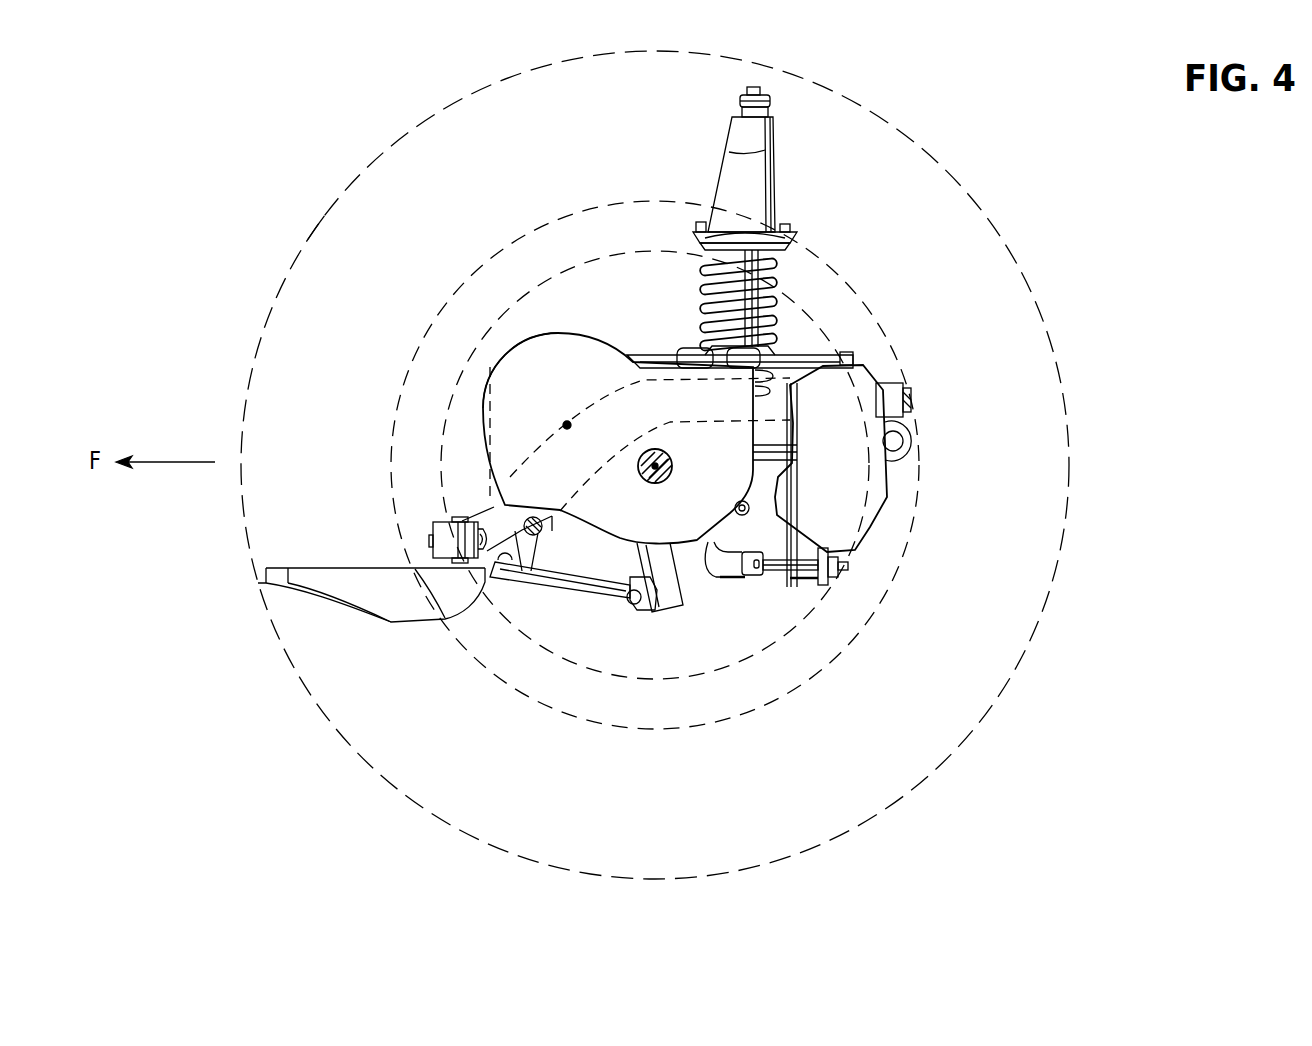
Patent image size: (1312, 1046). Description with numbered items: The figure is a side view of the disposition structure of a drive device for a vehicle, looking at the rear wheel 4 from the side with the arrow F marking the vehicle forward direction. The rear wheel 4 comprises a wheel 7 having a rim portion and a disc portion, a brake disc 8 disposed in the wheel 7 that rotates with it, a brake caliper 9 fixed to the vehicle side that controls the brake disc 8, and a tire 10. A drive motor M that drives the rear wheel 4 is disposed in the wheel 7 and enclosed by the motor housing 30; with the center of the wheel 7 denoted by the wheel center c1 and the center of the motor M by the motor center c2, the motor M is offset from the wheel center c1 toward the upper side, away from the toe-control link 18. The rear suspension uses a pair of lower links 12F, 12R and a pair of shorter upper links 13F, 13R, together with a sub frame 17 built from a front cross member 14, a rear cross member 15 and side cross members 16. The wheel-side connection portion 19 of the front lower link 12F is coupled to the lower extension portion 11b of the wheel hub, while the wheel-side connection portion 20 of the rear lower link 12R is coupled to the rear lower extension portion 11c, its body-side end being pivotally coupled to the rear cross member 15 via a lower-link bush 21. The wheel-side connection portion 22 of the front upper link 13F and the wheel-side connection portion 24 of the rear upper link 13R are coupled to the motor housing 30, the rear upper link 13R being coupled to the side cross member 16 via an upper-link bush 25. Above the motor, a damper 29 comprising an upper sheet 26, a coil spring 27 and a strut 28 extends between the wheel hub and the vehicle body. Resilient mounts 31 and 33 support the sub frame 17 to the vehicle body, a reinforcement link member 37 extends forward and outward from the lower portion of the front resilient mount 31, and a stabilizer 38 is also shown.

The rear wheel 4 is at (331, 206).
The tire 10 is at (313, 237).
The wheel 7 is at (559, 216).
The brake disc 8 is at (549, 280).
The motor housing 30 is at (537, 337).
The drive motor M is at (598, 331).
The side cross member 16 is at (580, 492).
The wheel center c1 is at (657, 468).
The motor center c2 is at (567, 422).
The front cross member 14 is at (480, 437).
The sub frame 17 is at (489, 500).
The toe-control link 18 is at (546, 539).
The reinforcement link member 37 is at (312, 561).
The front resilient mount 31 is at (440, 566).
The front lower link 12F is at (550, 580).
The wheel-side connection portion 19 is at (641, 612).
The lower extension portion 11b is at (676, 606).
The rear lower extension portion 11c is at (736, 584).
The wheel-side connection portion 20 is at (753, 577).
The rear lower link 12R is at (778, 582).
The lower-link bush 21 is at (822, 589).
The rear cross member 15 is at (797, 490).
The brake caliper 9 is at (845, 463).
The stabilizer 38 is at (914, 450).
The resilient mount 33 is at (906, 378).
The front upper link 13F is at (655, 354).
The rear upper link 13R is at (803, 355).
The upper-link bush 25 is at (831, 354).
The wheel-side connection portion 22 is at (688, 347).
The wheel-side connection portion 24 is at (741, 368).
The strut 28 is at (730, 290).
The coil spring 27 is at (708, 285).
The upper sheet 26 is at (800, 241).
The damper 29 is at (777, 165).